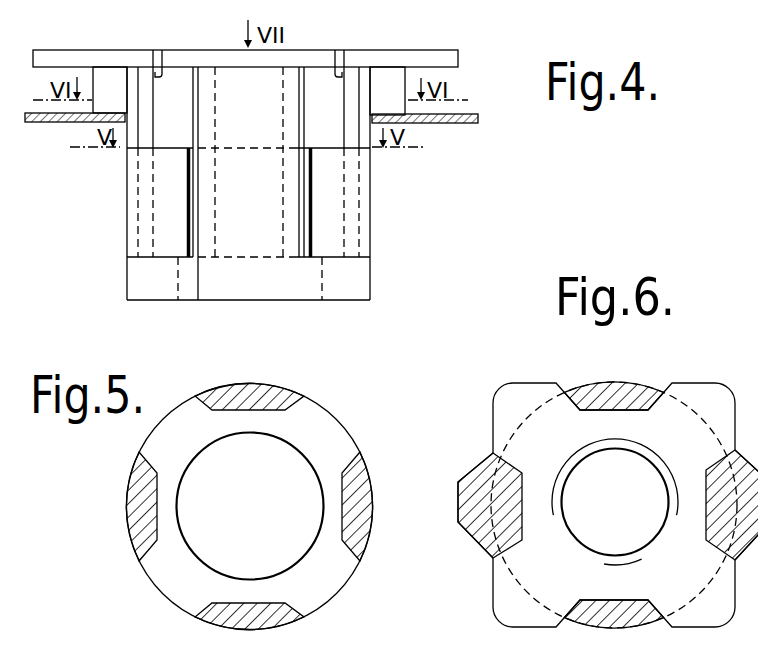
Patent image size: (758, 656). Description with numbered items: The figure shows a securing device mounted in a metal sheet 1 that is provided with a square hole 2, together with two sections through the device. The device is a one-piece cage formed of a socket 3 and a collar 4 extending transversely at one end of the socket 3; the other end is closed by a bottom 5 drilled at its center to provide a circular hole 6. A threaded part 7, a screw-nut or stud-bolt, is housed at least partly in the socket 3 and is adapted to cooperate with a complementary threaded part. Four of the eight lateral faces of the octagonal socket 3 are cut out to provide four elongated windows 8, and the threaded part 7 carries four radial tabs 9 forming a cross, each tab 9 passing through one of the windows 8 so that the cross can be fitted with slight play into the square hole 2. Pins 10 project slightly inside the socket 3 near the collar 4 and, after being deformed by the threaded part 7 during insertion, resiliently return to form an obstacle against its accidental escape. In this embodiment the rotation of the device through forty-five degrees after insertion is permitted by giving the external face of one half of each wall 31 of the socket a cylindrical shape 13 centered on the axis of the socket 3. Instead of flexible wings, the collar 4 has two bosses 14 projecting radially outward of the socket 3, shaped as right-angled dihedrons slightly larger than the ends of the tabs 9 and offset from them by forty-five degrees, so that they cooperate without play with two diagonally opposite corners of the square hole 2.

In FIG. 4, the metal sheet 1 is at (461, 125).
In FIG. 4, the square hole 2 is at (371, 116).
In FIG. 4, the socket 3 is at (127, 92).
In FIG. 5, the socket 3 is at (372, 527).
In FIG. 6, the socket 3 is at (626, 392).
In FIG. 4, the wall of the socket 31 is at (133, 77).
In FIG. 5, the wall of the socket 31 is at (361, 478).
In FIG. 4, the collar 4 is at (392, 62).
In FIG. 4, the bottom 5 is at (353, 278).
In FIG. 5, the bottom 5 is at (193, 437).
In FIG. 4, the circular hole 6 is at (320, 296).
In FIG. 5, the circular hole 6 is at (270, 438).
In FIG. 4, the threaded part 7 is at (322, 148).
In FIG. 6, the threaded part 7 is at (577, 437).
In FIG. 4, the windows 8 is at (143, 115).
In FIG. 5, the windows 8 is at (349, 457).
In FIG. 4, the radial tabs 9 is at (347, 220).
In FIG. 6, the radial tabs 9 is at (712, 395).
In FIG. 4, the pins 10 is at (163, 68).
In FIG. 5, the cylindrical shape 13 is at (216, 393).
In FIG. 6, the cylindrical shape 13 is at (578, 392).
In FIG. 4, the bosses 14 is at (388, 87).
In FIG. 6, the bosses 14 is at (485, 512).